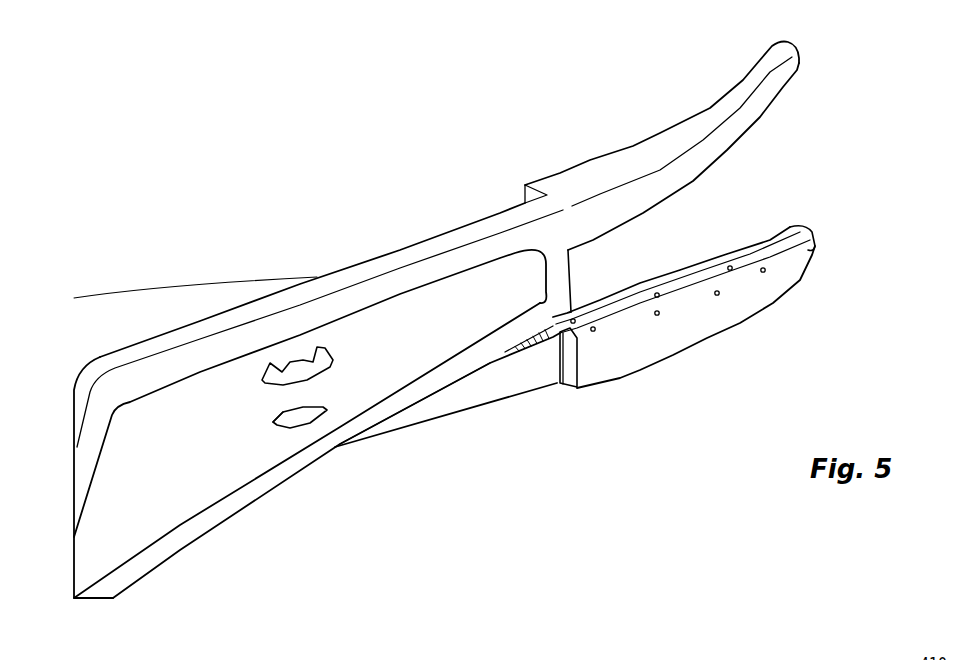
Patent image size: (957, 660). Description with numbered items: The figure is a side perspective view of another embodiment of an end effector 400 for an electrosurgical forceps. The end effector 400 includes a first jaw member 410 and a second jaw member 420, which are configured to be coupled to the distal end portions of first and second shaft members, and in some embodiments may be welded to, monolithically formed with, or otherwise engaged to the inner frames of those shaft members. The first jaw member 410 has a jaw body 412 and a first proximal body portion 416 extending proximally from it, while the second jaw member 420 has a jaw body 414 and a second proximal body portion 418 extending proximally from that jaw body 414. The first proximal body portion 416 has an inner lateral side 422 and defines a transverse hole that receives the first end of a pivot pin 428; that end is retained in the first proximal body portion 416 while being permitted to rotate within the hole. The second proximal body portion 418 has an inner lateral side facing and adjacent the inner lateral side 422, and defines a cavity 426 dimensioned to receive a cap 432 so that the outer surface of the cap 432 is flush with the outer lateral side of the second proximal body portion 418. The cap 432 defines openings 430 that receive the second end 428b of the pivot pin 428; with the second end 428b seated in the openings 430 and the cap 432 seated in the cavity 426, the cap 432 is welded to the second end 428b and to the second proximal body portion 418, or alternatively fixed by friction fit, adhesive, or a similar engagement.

The end effector 400 is at (459, 150).
The first jaw member 410 is at (557, 386).
The jaw body 412 is at (741, 325).
The jaw body 414 is at (636, 147).
The first proximal body portion 416 is at (494, 403).
The second proximal body portion 418 is at (407, 250).
The second jaw member 420 is at (523, 181).
The inner lateral side 422 is at (427, 410).
The cavity 426 is at (175, 533).
The pivot pin 428 is at (305, 428).
The second end 428b is at (300, 366).
The openings 430 is at (276, 430).
The cap 432 is at (203, 500).